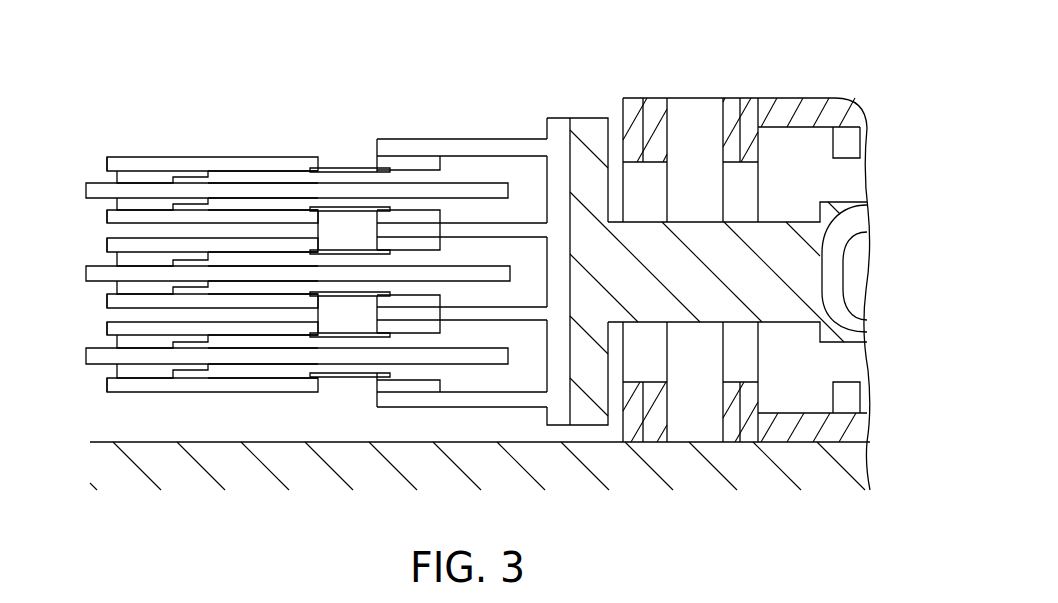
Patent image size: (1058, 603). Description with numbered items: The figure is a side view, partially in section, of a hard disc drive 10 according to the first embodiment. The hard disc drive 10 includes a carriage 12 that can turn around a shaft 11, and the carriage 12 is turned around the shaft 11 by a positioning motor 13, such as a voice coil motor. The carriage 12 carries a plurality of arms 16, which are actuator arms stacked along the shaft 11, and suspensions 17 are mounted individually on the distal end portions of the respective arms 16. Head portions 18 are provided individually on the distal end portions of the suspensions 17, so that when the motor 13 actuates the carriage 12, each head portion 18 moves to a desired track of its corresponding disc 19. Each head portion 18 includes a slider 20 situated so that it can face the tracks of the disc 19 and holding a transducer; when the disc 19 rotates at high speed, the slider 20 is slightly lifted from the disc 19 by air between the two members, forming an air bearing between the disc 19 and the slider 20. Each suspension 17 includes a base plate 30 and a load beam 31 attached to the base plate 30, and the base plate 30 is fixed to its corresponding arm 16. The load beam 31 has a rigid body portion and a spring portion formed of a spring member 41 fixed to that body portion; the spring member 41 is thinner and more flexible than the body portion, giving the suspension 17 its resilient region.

The hard disc drive 10 is at (296, 58).
The shaft 11 is at (687, 110).
The carriage 12 is at (547, 113).
The positioning motor 13 is at (799, 93).
The arm 16 is at (528, 222).
The suspension 17 is at (230, 151).
The head portion 18 is at (116, 161).
The disc 19 is at (475, 186).
The slider 20 is at (160, 178).
The base plate 30 is at (420, 242).
The load beam 31 is at (280, 205).
The spring member 41 is at (340, 216).